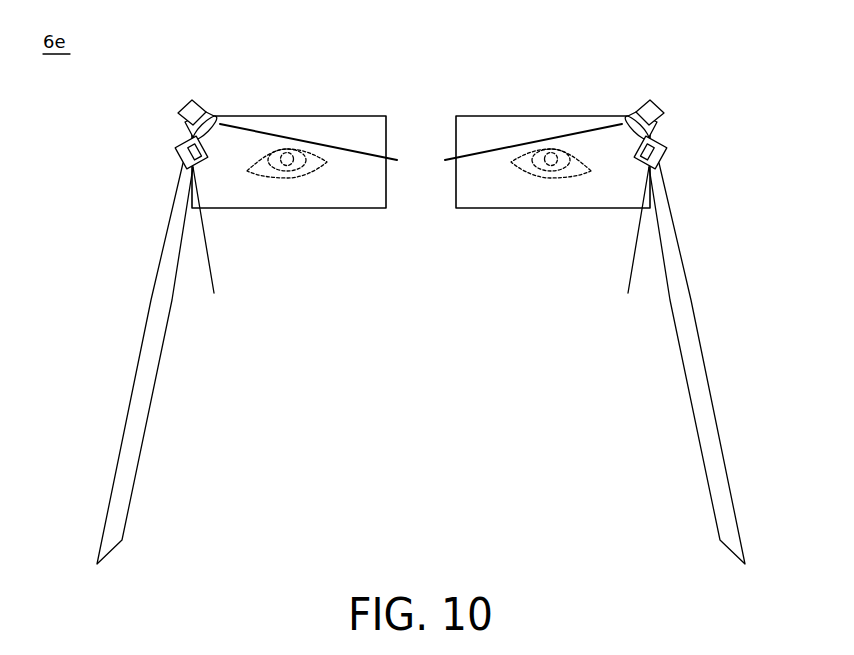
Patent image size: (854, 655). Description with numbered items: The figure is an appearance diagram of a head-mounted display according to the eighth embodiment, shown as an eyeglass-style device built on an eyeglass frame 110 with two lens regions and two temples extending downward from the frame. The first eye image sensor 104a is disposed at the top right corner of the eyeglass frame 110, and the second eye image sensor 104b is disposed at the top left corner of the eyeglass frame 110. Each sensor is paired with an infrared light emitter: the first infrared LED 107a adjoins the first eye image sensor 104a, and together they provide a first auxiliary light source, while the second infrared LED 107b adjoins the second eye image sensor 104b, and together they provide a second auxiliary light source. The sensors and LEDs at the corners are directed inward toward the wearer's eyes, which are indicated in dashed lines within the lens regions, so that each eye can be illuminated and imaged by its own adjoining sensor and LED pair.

The first eye image sensor 104a is at (664, 113).
The second eye image sensor 104b is at (178, 113).
The first infrared LED 107a is at (666, 149).
The second infrared LED 107b is at (177, 149).
The eyeglass frame 110 is at (677, 290).